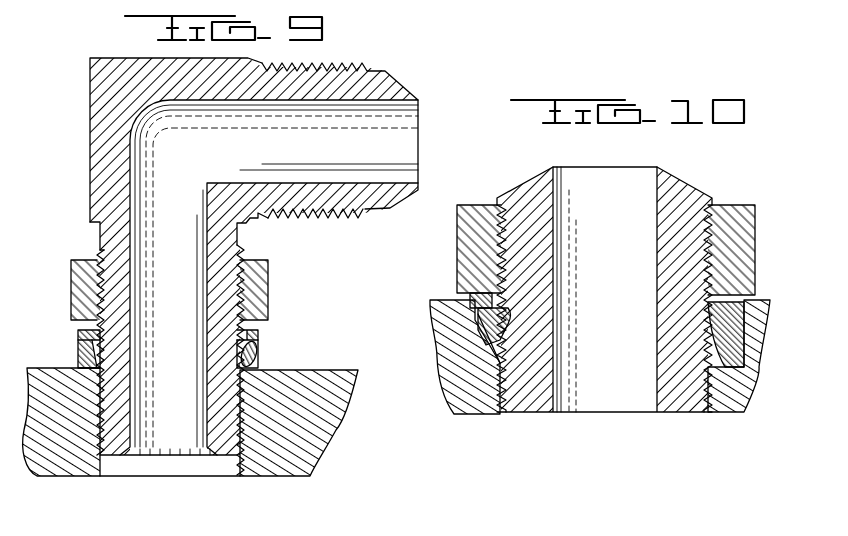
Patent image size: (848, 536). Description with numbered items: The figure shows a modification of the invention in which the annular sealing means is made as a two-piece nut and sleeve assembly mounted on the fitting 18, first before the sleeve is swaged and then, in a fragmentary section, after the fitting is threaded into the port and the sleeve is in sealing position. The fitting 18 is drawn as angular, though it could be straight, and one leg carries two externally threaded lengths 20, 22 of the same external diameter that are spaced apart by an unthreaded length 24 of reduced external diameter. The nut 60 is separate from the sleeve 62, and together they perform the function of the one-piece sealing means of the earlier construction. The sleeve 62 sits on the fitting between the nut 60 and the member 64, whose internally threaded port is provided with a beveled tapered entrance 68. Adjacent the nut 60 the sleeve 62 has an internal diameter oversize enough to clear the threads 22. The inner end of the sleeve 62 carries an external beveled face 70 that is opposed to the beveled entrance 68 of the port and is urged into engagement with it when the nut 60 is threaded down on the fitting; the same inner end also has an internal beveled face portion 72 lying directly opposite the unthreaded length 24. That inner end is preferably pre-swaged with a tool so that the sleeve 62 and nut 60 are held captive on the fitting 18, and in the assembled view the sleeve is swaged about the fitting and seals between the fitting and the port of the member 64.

In FIG. 9, the fitting 18 is at (112, 62).
In FIG. 10, the fitting 18 is at (680, 185).
In FIG. 9, the inner threaded length 20 is at (98, 456).
In FIG. 9, the outer threaded length 22 is at (243, 253).
In FIG. 9, the unthreaded length 24 is at (82, 338).
In FIG. 9, the nut 60 is at (80, 272).
In FIG. 10, the nut 60 is at (744, 248).
In FIG. 9, the sleeve 62 is at (260, 337).
In FIG. 10, the sleeve 62 is at (516, 316).
In FIG. 9, the member 64 is at (292, 463).
In FIG. 10, the member 64 is at (487, 410).
In FIG. 9, the beveled tapered entrance 68 is at (70, 372).
In FIG. 10, the beveled tapered entrance 68 is at (704, 338).
In FIG. 9, the external beveled face 70 is at (88, 378).
In FIG. 10, the external beveled face 70 is at (487, 337).
In FIG. 9, the internal beveled face portion 72 is at (259, 349).
In FIG. 10, the internal beveled face portion 72 is at (499, 352).